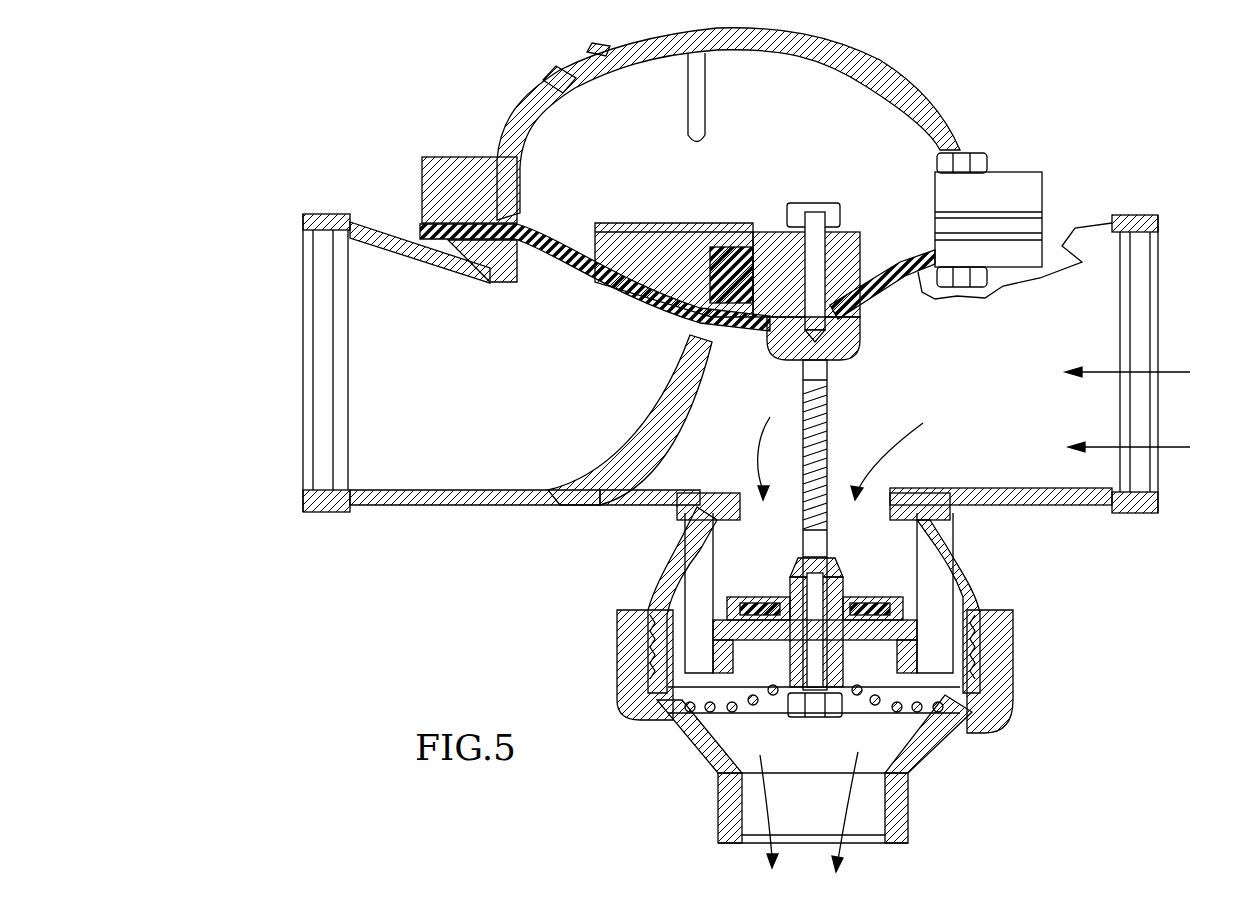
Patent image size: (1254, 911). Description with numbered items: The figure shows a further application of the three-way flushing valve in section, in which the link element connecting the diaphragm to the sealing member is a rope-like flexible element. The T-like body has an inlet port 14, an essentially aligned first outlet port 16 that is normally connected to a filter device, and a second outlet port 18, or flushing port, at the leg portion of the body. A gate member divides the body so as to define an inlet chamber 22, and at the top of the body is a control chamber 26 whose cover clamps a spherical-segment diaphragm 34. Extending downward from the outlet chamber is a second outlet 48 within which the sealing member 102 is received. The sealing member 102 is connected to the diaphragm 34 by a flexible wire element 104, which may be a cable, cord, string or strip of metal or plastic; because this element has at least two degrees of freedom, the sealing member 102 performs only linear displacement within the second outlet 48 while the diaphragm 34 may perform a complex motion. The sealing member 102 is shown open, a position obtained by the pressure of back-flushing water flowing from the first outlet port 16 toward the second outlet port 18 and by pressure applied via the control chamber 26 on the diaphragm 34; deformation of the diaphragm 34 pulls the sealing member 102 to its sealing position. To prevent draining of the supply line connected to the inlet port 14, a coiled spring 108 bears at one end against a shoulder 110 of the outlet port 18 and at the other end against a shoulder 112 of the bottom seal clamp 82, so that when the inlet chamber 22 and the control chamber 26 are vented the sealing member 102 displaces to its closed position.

The inlet port 14 is at (322, 298).
The first outlet port 16 is at (1143, 283).
The second outlet port 18 is at (867, 817).
The inlet chamber 22 is at (473, 455).
The control chamber 26 is at (787, 80).
The diaphragm 34 is at (893, 290).
The second outlet 48 is at (665, 577).
The bottom seal clamp 82 is at (960, 678).
The sealing member 102 is at (895, 578).
The flexible wire element 104 is at (818, 412).
The coiled spring 108 is at (922, 710).
The shoulder 110 is at (712, 740).
The shoulder 112 is at (663, 705).